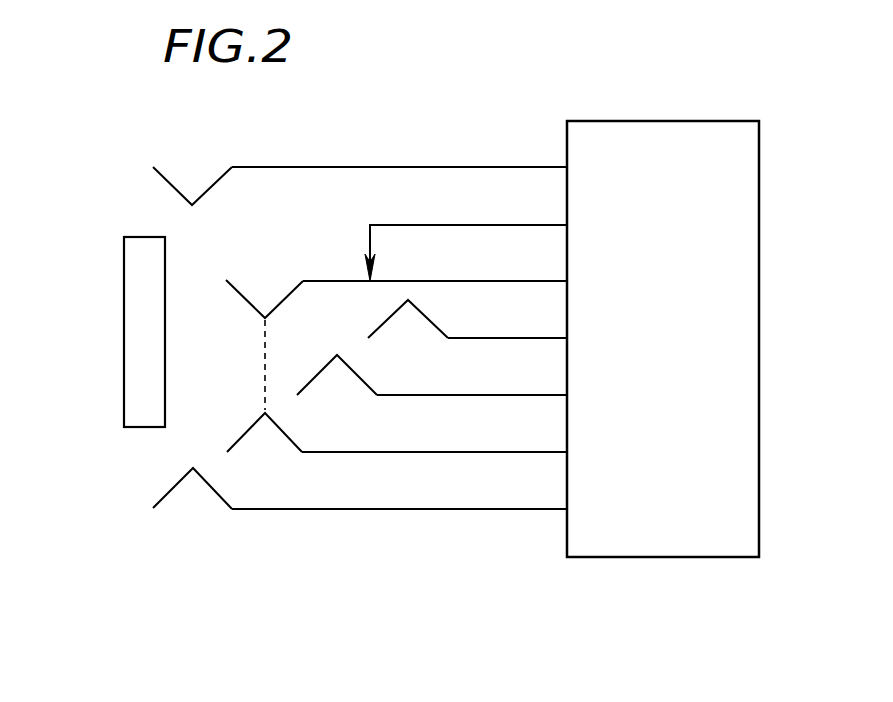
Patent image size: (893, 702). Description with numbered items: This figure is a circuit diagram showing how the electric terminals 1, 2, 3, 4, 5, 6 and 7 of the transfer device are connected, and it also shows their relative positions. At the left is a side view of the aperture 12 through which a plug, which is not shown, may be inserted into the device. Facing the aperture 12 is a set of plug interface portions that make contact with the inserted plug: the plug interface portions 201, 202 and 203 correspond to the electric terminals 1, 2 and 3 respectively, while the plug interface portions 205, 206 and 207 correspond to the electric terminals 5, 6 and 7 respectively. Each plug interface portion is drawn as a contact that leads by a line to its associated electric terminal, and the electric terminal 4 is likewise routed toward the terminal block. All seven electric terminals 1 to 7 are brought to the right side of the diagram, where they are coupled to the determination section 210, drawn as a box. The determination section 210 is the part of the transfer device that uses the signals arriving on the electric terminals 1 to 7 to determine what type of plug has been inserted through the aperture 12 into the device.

The electric terminal 1 is at (540, 167).
The electric terminal 2 is at (553, 338).
The electric terminal 3 is at (551, 395).
The electric terminal 4 is at (548, 225).
The electric terminal 5 is at (553, 452).
The electric terminal 6 is at (548, 281).
The electric terminal 7 is at (551, 509).
The aperture 12 is at (125, 422).
The plug interface portion 201 is at (190, 197).
The plug interface portion 202 is at (407, 307).
The plug interface portion 203 is at (335, 363).
The plug interface portion 205 is at (263, 423).
The plug interface portion 206 is at (263, 310).
The plug interface portion 207 is at (192, 478).
The determination section 210 is at (718, 558).